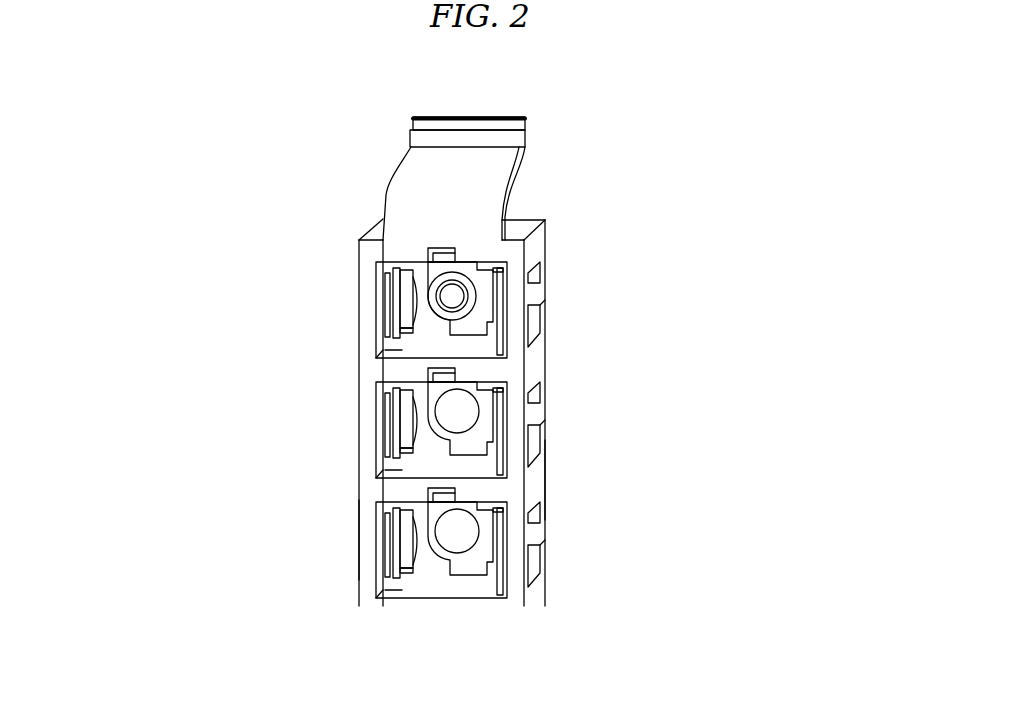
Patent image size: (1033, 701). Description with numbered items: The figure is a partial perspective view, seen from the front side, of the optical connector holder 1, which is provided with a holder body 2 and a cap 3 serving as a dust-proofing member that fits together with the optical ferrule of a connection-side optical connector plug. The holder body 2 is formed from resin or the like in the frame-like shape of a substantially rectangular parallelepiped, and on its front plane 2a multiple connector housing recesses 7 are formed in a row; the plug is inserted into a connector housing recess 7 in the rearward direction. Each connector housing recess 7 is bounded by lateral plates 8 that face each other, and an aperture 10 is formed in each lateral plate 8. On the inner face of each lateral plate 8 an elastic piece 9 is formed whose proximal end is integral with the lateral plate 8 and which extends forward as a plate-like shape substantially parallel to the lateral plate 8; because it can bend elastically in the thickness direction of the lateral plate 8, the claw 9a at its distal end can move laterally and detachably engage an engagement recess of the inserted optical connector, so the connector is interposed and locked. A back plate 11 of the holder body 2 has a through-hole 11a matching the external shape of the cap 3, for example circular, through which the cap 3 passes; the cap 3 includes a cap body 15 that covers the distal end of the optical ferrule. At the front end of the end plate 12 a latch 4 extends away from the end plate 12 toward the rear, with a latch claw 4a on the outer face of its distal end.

The optical connector holder 1 is at (587, 207).
The holder body 2 is at (546, 477).
The front plane 2a is at (367, 543).
The cap 3 is at (470, 262).
The latch 4 is at (513, 117).
The latch claw 4a is at (437, 117).
The connector housing recess 7 is at (405, 470).
The lateral plate 8 is at (357, 318).
The elastic piece 9 is at (398, 436).
The claw 9a is at (422, 388).
The aperture 10 is at (530, 272).
The back plate 11 is at (450, 333).
The through-hole 11a is at (447, 432).
The end plate 12 is at (530, 222).
The cap body 15 is at (420, 303).